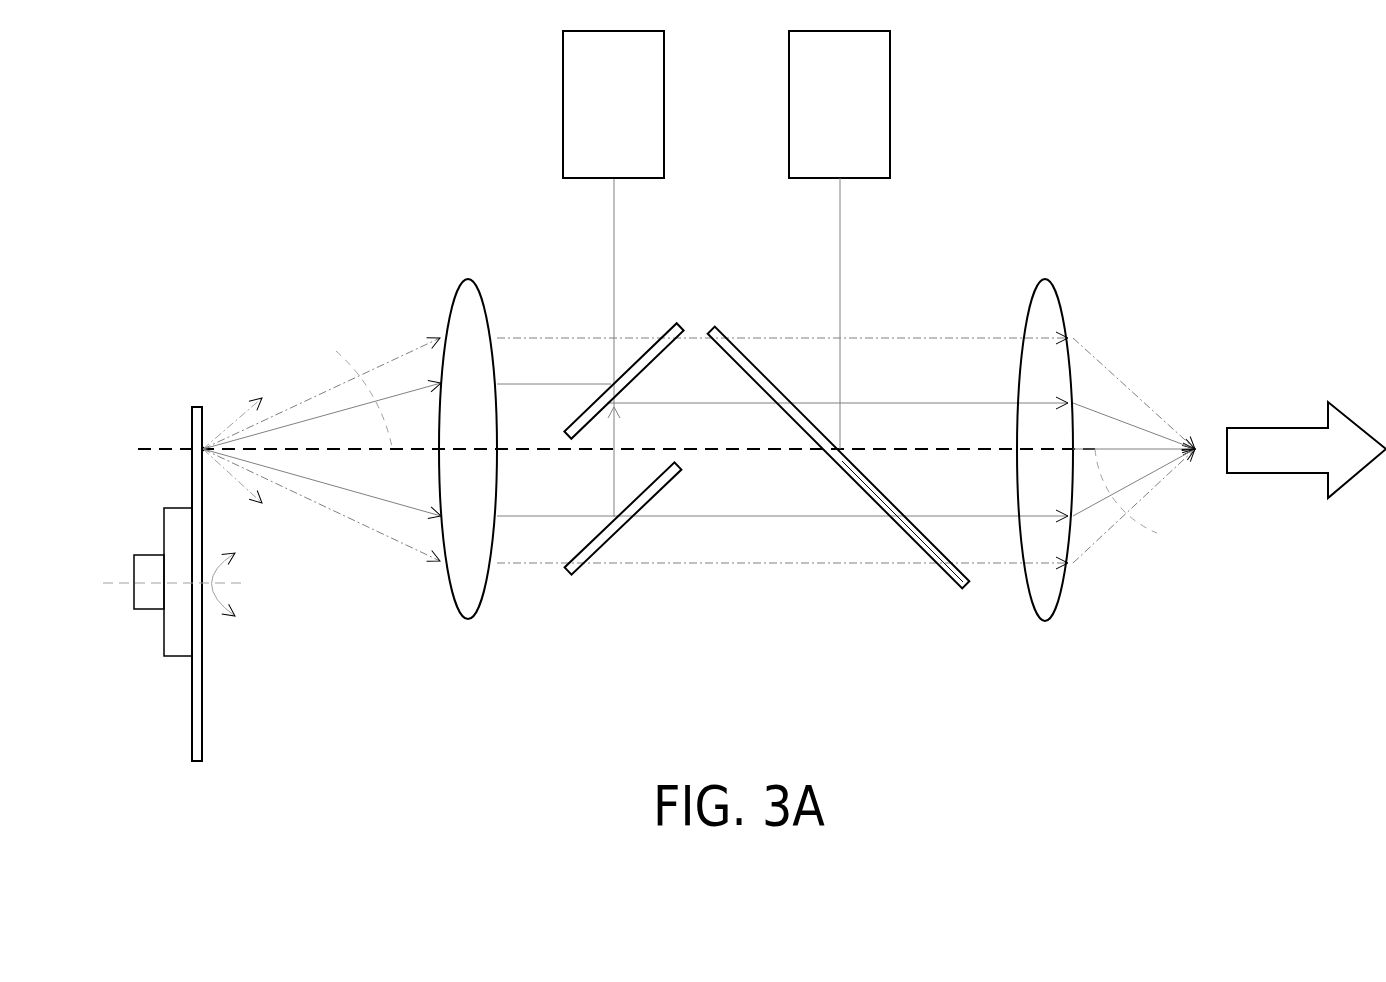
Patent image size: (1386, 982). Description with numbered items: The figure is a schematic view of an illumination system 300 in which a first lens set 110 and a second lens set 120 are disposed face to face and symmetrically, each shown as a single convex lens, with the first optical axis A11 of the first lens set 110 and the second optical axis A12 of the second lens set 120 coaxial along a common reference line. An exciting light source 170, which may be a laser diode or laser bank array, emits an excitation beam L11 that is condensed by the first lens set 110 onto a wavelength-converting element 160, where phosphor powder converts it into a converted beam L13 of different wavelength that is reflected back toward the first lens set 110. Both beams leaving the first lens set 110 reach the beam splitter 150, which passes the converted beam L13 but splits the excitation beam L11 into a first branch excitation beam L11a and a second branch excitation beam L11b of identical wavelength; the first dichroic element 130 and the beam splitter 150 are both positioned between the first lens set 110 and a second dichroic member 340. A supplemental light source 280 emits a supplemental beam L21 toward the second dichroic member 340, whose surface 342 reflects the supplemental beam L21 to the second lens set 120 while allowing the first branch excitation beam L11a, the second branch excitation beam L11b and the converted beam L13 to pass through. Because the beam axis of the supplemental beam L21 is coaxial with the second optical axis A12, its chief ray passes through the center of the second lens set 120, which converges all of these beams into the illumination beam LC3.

The illumination system 300 is at (145, 164).
The first lens set 110 is at (466, 265).
The second lens set 120 is at (1043, 265).
The first dichroic element 130 is at (689, 323).
The beam splitter 150 is at (603, 541).
The wavelength-converting element 160 is at (195, 424).
The exciting light source 170 is at (632, 122).
The supplemental light source 280 is at (857, 122).
The second dichroic member 340 is at (955, 578).
The reflective surface of light combining element 342 is at (969, 577).
The excitation beam L11 is at (614, 200).
The supplemental beam L21 is at (840, 200).
The first branch excitation beam L11a is at (733, 518).
The second branch excitation beam L11b is at (616, 433).
The converted beam L13 is at (305, 400).
The first optical axis A11 is at (355, 384).
The second optical axis A12 is at (1134, 451).
The illumination beam LC3 is at (1282, 440).